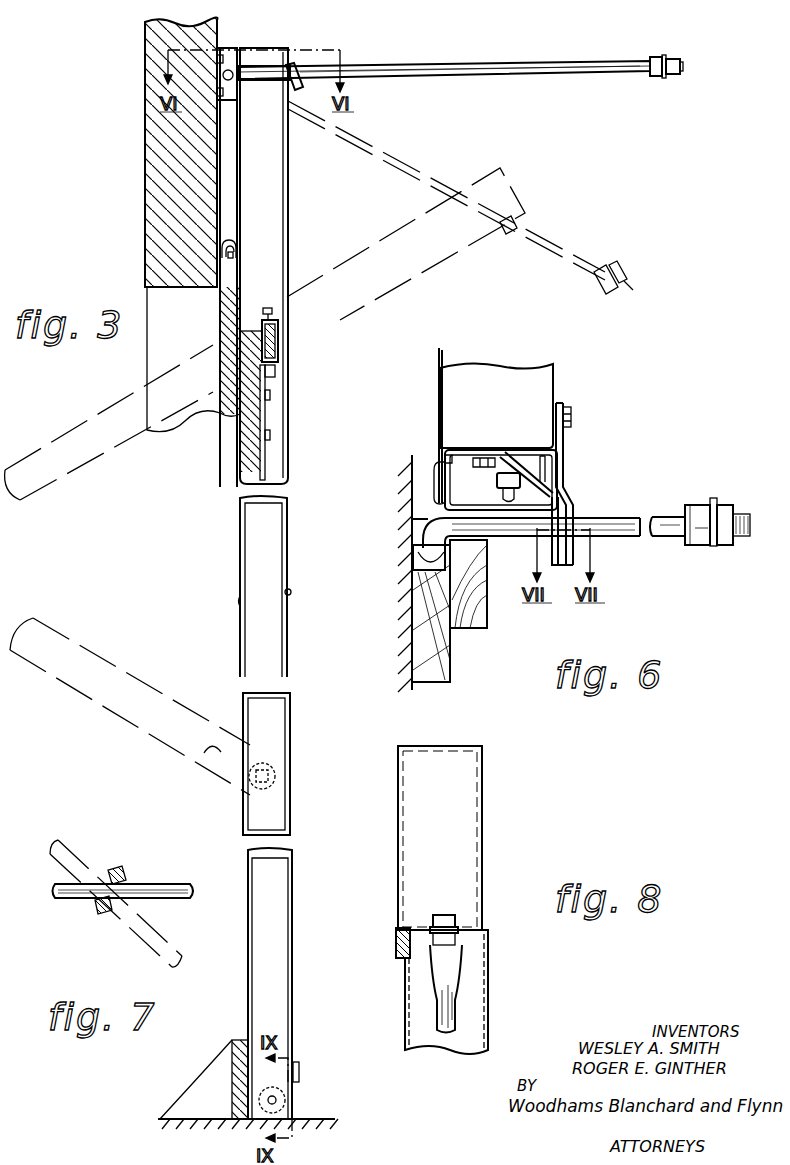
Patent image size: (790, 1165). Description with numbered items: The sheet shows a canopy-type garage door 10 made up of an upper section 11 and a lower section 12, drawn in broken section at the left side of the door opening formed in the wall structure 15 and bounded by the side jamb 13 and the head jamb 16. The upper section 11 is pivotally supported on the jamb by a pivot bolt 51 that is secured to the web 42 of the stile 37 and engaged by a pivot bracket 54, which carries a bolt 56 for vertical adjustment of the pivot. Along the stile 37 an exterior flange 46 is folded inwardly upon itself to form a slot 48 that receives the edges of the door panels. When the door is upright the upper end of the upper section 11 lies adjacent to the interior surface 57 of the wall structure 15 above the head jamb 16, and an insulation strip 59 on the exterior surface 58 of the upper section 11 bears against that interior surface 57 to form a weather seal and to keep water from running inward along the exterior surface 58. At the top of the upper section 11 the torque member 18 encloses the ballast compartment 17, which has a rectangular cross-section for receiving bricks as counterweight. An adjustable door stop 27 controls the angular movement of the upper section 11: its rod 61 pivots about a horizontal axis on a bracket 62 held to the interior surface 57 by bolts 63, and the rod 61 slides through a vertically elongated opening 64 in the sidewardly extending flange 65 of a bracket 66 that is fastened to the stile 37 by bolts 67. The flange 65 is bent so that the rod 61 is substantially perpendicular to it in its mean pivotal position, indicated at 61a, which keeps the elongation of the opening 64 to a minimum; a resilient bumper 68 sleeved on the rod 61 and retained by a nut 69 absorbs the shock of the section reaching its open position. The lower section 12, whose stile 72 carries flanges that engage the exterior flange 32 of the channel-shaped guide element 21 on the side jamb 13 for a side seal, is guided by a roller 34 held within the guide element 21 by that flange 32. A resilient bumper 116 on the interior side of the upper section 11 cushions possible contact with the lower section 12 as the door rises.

In FIG. 3, the garage door 10 is at (291, 520).
In FIG. 3, the upper section 11 is at (238, 500).
In FIG. 8, the upper section 11 is at (398, 946).
In FIG. 3, the lower section 12 is at (297, 858).
In FIG. 6, the side jamb 13 is at (460, 620).
In FIG. 3, the wall structure 15 is at (146, 96).
In FIG. 3, the head jamb 16 is at (165, 150).
In FIG. 8, the ballast compartment 17 is at (465, 780).
In FIG. 6, the torque member 18 is at (455, 377).
In FIG. 8, the torque member 18 is at (487, 815).
In FIG. 3, the guide element 21 is at (272, 631).
In FIG. 6, the guide element 21 is at (548, 471).
In FIG. 3, the door stop 27 is at (396, 52).
In FIG. 6, the door stop 27 is at (416, 565).
In FIG. 6, the exterior flange 32 is at (410, 515).
In FIG. 3, the roller 34 is at (280, 766).
In FIG. 3, the stile 37 is at (291, 200).
In FIG. 6, the stile 37 is at (535, 448).
In FIG. 3, the web 42 is at (280, 250).
In FIG. 6, the web 42 is at (505, 455).
In FIG. 3, the exterior flange 46 is at (225, 242).
In FIG. 6, the exterior flange 46 is at (433, 468).
In FIG. 6, the slot 48 is at (440, 492).
In FIG. 3, the pivot bolt 51 is at (278, 338).
In FIG. 6, the pivot bolt 51 is at (497, 492).
In FIG. 3, the pivot bracket 54 is at (268, 410).
In FIG. 3, the bolt 56 is at (276, 370).
In FIG. 3, the interior surface 57 is at (237, 175).
In FIG. 3, the exterior surface 58 is at (237, 205).
In FIG. 6, the exterior surface 58 is at (438, 411).
In FIG. 3, the insulation strip 59 is at (238, 246).
In FIG. 3, the rod 61 is at (515, 73).
In FIG. 6, the rod 61 is at (624, 540).
In FIG. 7, the rod 61 is at (156, 888).
In FIG. 3, the rod mean pivotal position 61a is at (396, 152).
In FIG. 3, the bracket 62 is at (243, 80).
In FIG. 6, the bracket 62 is at (420, 582).
In FIG. 3, the bolt 63 is at (236, 96).
In FIG. 6, the elongated opening 64 is at (572, 518).
In FIG. 7, the elongated opening 64 is at (115, 876).
In FIG. 3, the flange 65 is at (300, 84).
In FIG. 6, the flange 65 is at (562, 568).
In FIG. 7, the flange 65 is at (98, 908).
In FIG. 3, the bracket 66 is at (272, 56).
In FIG. 6, the bracket 66 is at (566, 492).
In FIG. 6, the bolt 67 is at (573, 418).
In FIG. 3, the resilient bumper 68 is at (655, 78).
In FIG. 6, the resilient bumper 68 is at (700, 546).
In FIG. 3, the nut 69 is at (680, 73).
In FIG. 6, the nut 69 is at (722, 508).
In FIG. 3, the stile 72 is at (290, 823).
In FIG. 3, the resilient bumper 116 is at (213, 746).